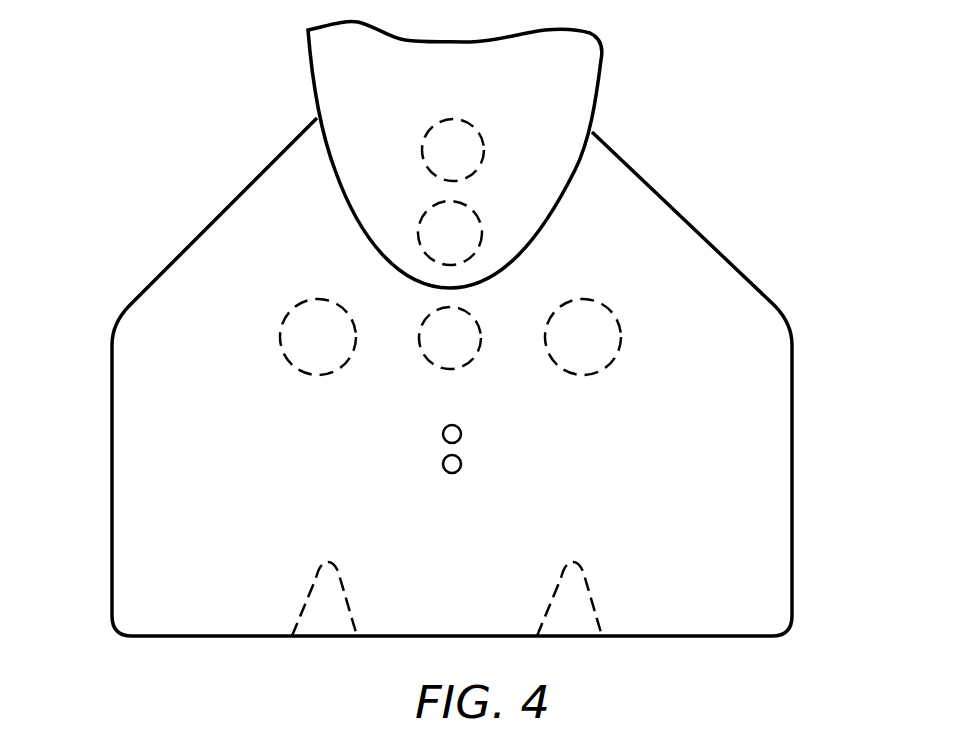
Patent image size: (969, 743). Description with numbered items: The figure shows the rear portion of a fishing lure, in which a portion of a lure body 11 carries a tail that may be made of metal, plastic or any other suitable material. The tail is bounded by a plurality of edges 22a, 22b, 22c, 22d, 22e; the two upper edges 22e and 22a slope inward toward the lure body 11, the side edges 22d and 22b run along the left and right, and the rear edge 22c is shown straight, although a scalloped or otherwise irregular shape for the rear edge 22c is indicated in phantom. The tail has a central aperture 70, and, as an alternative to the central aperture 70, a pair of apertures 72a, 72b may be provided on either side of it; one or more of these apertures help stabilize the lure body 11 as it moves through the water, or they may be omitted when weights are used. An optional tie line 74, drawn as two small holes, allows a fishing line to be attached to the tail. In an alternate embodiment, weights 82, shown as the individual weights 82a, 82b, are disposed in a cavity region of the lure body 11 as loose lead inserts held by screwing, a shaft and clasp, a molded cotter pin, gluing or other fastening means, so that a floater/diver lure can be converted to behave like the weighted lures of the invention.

The lure body 11 is at (655, 0).
The tail edge 22a is at (795, 176).
The tail edge 22b is at (887, 472).
The rear edge 22c is at (767, 644).
The tail edge 22d is at (112, 500).
The tail edge 22e is at (170, 265).
The central aperture 70 is at (477, 355).
The aperture 72a is at (613, 313).
The aperture 72b is at (292, 310).
The tie line 74 is at (474, 450).
The weights 82 is at (515, 147).
The weight 82a is at (435, 128).
The weight 82b is at (430, 210).